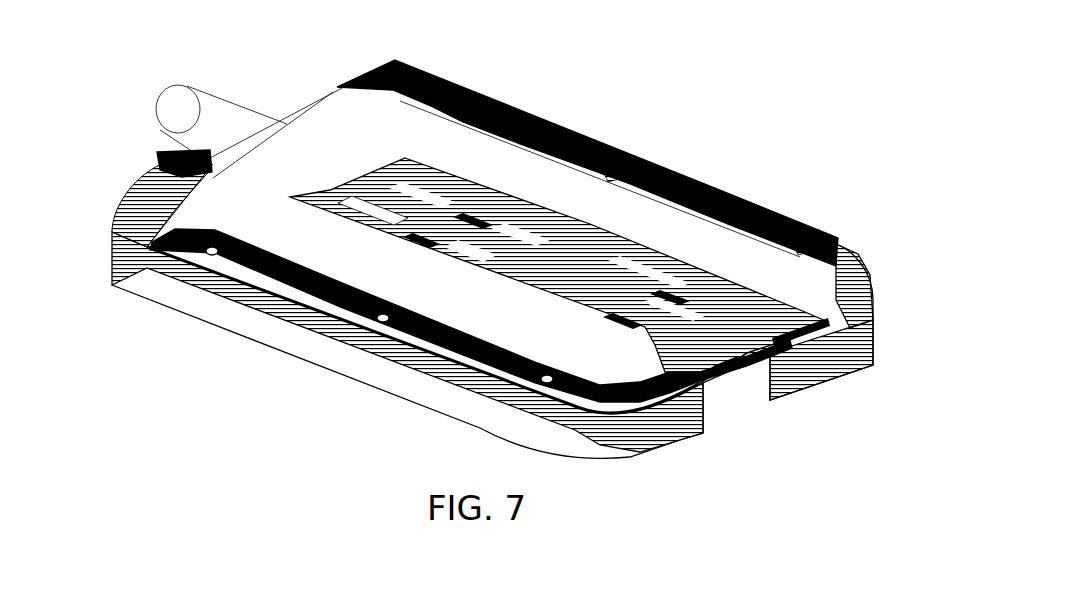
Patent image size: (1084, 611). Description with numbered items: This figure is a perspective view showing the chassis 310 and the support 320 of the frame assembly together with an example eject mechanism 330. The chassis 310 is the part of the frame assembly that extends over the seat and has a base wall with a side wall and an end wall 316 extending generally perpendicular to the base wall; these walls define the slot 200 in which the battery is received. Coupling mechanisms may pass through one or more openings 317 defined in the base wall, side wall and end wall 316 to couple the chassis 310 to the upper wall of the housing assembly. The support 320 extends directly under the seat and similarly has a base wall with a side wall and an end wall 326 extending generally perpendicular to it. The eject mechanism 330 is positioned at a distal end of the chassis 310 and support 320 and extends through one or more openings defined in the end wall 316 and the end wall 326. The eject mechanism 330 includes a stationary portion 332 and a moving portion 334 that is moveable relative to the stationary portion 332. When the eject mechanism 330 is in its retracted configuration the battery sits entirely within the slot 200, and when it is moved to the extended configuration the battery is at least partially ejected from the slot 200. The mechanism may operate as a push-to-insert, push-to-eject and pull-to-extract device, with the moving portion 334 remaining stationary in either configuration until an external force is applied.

The chassis 310 is at (825, 250).
The end wall 316 is at (132, 197).
The openings 317 is at (214, 256).
The support 320 is at (530, 185).
The end wall 326 is at (186, 222).
The eject mechanism 330 is at (275, 82).
The stationary portion 332 is at (198, 68).
The moving portion 334 is at (372, 186).
The slot 200 is at (565, 280).